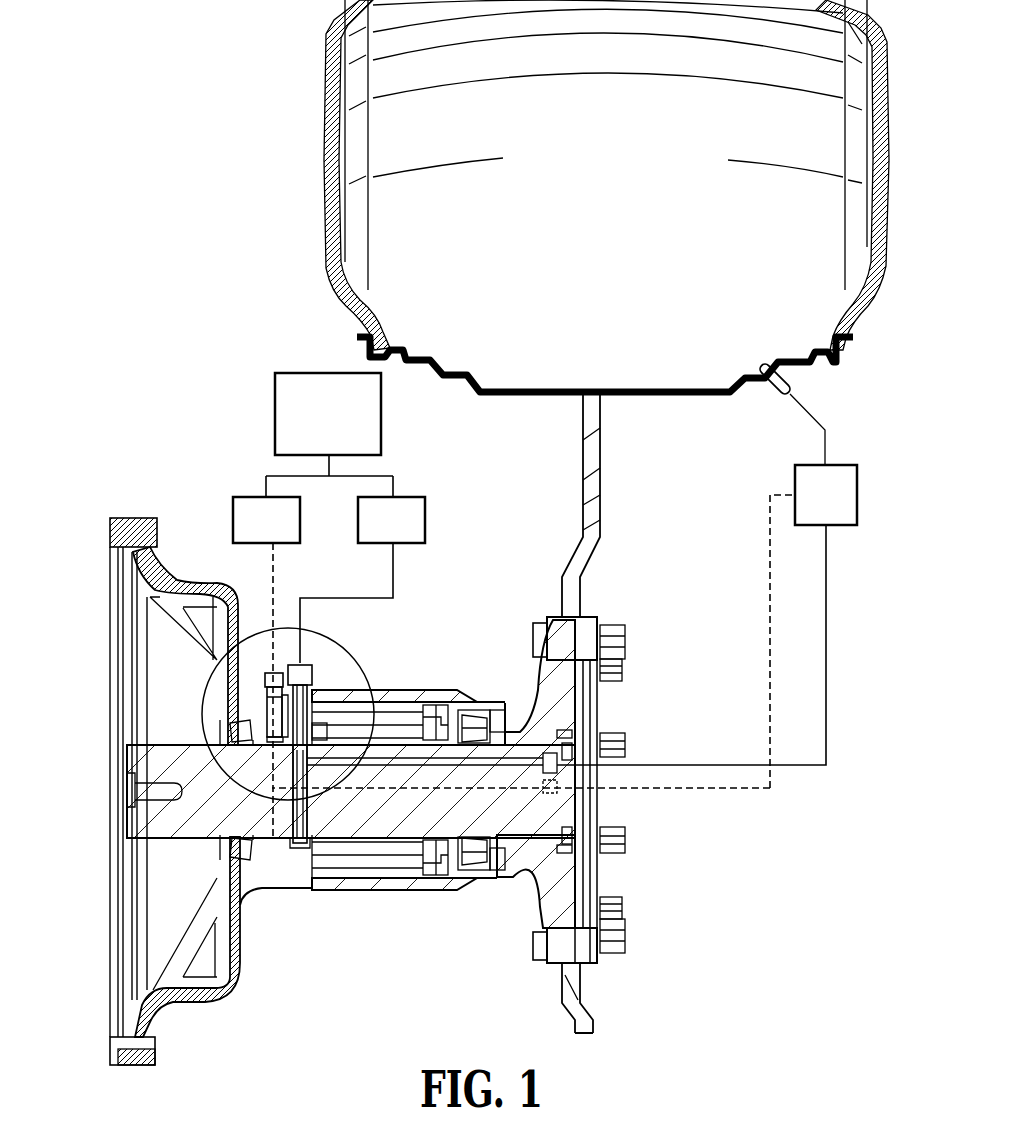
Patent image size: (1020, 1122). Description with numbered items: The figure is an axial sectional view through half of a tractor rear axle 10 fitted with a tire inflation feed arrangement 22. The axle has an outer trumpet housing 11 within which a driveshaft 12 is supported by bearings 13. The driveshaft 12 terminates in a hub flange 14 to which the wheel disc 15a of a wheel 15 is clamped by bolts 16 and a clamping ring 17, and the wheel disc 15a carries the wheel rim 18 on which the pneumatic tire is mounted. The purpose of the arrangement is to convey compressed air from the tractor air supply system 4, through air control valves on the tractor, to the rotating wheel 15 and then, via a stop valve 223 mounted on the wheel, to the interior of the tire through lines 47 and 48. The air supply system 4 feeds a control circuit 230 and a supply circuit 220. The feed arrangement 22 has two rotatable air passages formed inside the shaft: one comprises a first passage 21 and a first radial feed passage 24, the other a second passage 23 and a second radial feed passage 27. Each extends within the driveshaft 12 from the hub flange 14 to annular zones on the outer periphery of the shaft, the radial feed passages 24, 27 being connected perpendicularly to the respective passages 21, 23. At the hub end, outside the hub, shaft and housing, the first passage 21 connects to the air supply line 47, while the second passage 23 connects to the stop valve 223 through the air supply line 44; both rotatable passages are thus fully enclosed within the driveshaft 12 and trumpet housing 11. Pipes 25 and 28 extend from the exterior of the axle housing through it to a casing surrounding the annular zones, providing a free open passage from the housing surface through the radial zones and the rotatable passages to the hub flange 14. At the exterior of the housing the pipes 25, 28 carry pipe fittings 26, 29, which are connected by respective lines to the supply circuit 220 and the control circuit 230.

The air supply system 4 is at (328, 414).
The tractor rear axle 10 is at (242, 897).
The outer trumpet housing 11 is at (367, 780).
The driveshaft 12 is at (465, 880).
The bearings 13 is at (485, 888).
The hub flange 14 is at (565, 905).
The wheel 15 is at (559, 419).
The wheel disc 15a is at (592, 524).
The bolts 16 is at (590, 640).
The clamping ring 17 is at (597, 698).
The wheel rim 18 is at (628, 388).
The first passage 21 is at (583, 806).
The tire inflation feed arrangement 22 is at (382, 690).
The second passage 23 is at (433, 813).
The first radial feed passage 24 is at (330, 848).
The pipe 25 is at (316, 712).
The pipe fitting 26 is at (314, 672).
The second radial feed passage 27 is at (237, 675).
The pipe 28 is at (267, 697).
The pipe fitting 29 is at (275, 673).
The air supply line 44 is at (722, 788).
The air supply line 47 is at (683, 765).
The line 48 is at (817, 402).
The supply circuit 220 is at (362, 580).
The stop valve 223 is at (826, 495).
The control circuit 230 is at (266, 520).